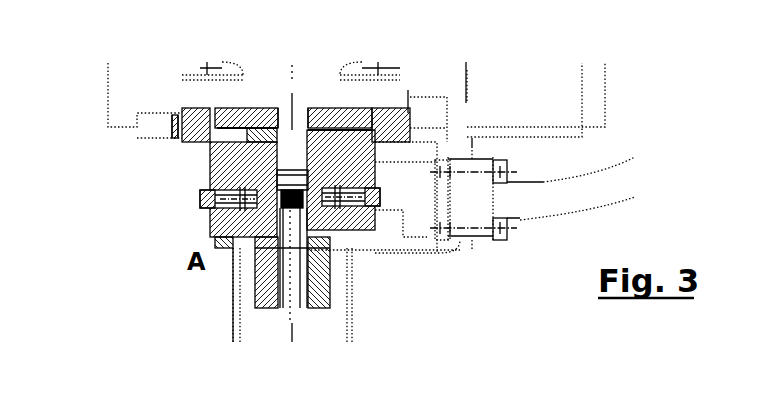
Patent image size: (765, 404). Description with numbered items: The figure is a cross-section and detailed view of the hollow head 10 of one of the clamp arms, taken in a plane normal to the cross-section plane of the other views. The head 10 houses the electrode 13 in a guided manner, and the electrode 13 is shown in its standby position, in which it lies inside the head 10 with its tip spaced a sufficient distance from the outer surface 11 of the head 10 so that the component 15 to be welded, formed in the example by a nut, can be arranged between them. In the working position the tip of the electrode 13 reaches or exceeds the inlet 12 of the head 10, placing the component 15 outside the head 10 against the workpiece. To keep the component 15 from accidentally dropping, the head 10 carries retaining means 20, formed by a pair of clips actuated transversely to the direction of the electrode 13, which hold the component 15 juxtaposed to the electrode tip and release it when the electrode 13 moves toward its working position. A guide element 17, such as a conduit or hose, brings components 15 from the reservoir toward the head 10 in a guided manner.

The hollow head 10 is at (210, 168).
The outer surface 11 is at (313, 305).
The inlet 12 is at (291, 308).
The electrode 13 is at (288, 120).
The component 15 is at (303, 207).
The guide element 17 is at (537, 208).
The retaining means 20 is at (258, 193).